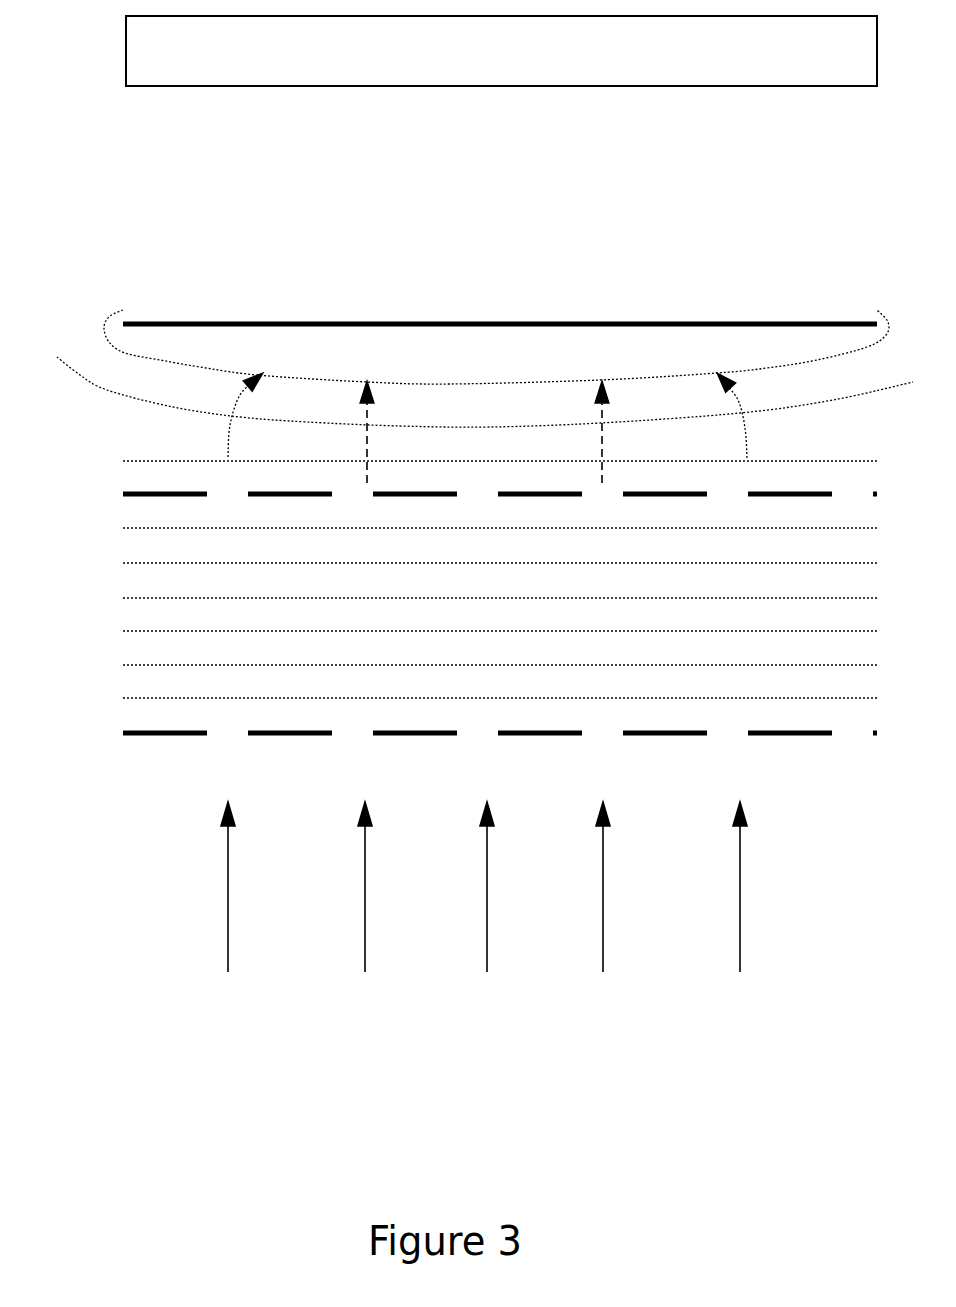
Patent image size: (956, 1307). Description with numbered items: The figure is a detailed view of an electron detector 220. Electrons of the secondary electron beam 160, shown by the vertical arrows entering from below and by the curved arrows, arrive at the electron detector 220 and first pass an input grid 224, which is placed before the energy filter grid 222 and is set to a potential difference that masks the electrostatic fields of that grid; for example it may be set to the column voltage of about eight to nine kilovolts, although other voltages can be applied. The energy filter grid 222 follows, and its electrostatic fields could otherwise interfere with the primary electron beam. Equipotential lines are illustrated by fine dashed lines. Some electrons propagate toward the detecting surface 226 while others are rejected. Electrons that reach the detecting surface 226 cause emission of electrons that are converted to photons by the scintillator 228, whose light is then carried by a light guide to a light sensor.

The scintillator 228 is at (501, 51).
The detecting surface 226 is at (210, 322).
The energy filter grid 222 is at (123, 493).
The input grid 224 is at (125, 730).
The electron detector 220 is at (457, 647).
The secondary electron beam 160 is at (484, 937).